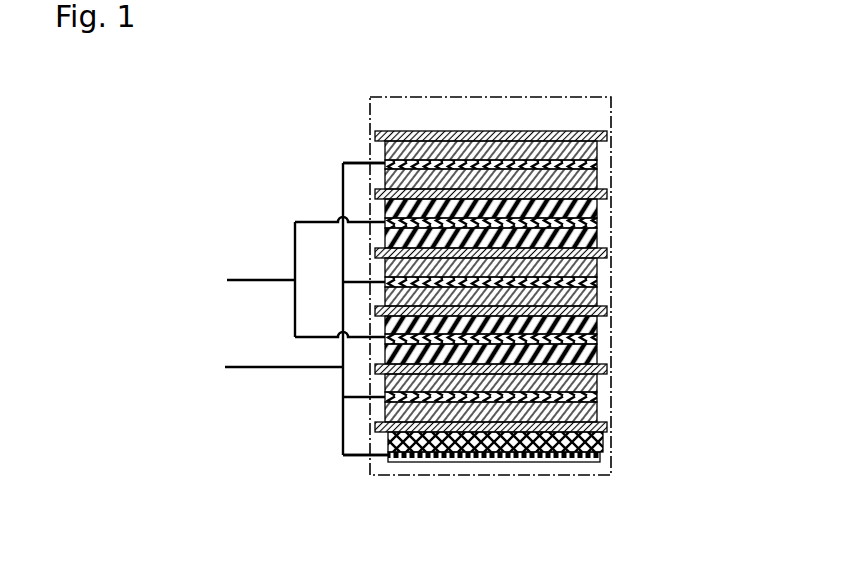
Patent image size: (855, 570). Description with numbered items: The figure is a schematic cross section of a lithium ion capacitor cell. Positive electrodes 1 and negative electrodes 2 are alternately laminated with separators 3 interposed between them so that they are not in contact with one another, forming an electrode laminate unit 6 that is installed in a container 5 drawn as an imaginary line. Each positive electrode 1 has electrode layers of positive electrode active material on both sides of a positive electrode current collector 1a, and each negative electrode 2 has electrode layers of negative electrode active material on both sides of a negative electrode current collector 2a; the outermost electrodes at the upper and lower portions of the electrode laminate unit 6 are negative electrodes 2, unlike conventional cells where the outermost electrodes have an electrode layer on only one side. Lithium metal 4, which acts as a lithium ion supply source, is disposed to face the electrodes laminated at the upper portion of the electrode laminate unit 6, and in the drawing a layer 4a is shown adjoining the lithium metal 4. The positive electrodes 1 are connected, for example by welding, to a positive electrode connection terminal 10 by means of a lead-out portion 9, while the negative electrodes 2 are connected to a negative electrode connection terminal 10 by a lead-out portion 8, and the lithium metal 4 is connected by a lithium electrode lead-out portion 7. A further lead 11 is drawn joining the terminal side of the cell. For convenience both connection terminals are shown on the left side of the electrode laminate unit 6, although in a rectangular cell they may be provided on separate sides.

The positive electrode 1 is at (597, 210).
The positive electrode current collector 1a is at (597, 223).
The negative electrode 2 is at (597, 151).
The negative electrode current collector 2a is at (597, 165).
The separator 3 is at (607, 137).
The lithium metal 4 is at (603, 442).
The base electrode layer 4a is at (600, 457).
The container 5 is at (571, 477).
The electrode laminate unit 6 is at (704, 141).
The lithium electrode lead-out portion 7 is at (362, 458).
The lead-out portion 8 is at (362, 160).
The lead-out portion 9 is at (321, 222).
The connection terminal 10 is at (255, 278).
The lead wire 11 is at (267, 369).